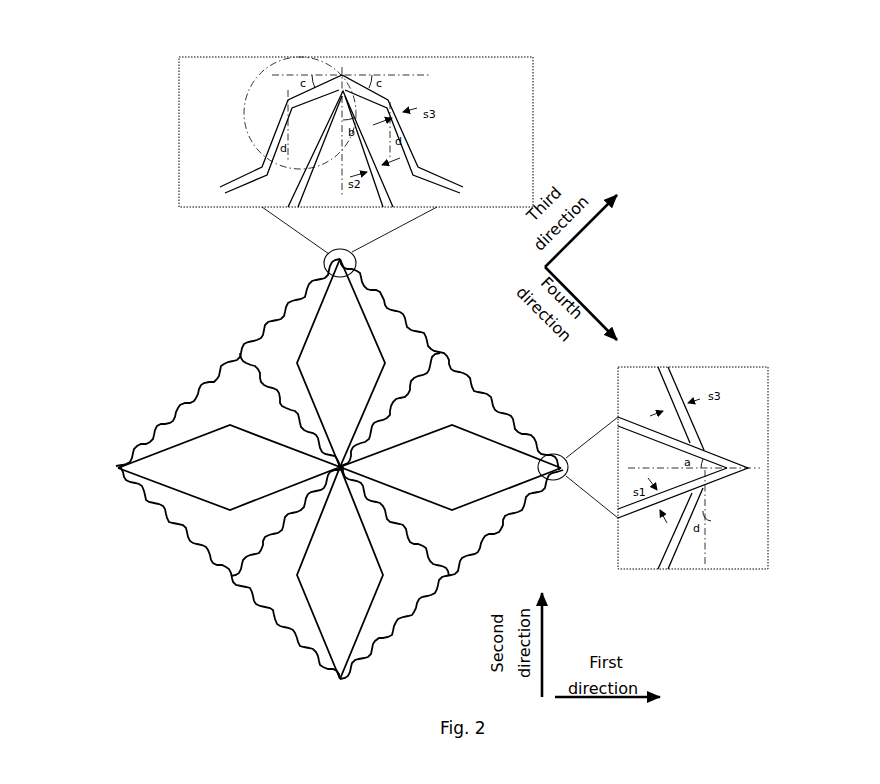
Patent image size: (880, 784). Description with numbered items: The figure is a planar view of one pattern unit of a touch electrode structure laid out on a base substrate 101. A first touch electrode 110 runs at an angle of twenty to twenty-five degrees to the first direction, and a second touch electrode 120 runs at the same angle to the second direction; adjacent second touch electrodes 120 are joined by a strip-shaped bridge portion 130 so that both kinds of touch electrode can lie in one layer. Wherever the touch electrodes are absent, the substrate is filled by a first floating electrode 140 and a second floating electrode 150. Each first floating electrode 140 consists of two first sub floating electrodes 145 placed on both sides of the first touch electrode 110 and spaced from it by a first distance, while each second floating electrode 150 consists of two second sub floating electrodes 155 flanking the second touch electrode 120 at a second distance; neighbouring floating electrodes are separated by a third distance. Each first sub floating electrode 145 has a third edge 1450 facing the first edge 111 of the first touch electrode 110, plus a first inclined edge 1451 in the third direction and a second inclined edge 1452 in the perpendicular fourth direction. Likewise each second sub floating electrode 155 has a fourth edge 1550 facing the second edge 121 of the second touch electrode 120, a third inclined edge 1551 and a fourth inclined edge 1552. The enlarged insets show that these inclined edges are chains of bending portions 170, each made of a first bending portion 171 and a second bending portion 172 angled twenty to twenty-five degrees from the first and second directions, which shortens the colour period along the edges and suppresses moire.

The base substrate 101 is at (105, 272).
The first touch electrode 110 is at (210, 485).
The first edge 111 is at (703, 488).
The second touch electrode 120 is at (330, 558).
The second edge 121 is at (383, 195).
The bridge portion 130 is at (330, 480).
The first floating electrode 140 is at (467, 397).
The first sub floating electrode 145 is at (440, 97).
The second floating electrode 150 is at (278, 333).
The second sub floating electrode 155 is at (378, 108).
The bending portion 170 is at (245, 130).
The first bending portion 171 is at (312, 93).
The second bending portion 172 is at (280, 122).
The third edge 1450 is at (403, 442).
The first inclined edge 1451 is at (520, 513).
The second inclined edge 1452 is at (423, 548).
The fourth edge 1550 is at (312, 320).
The third inclined edge 1551 is at (428, 380).
The fourth inclined edge 1552 is at (390, 300).